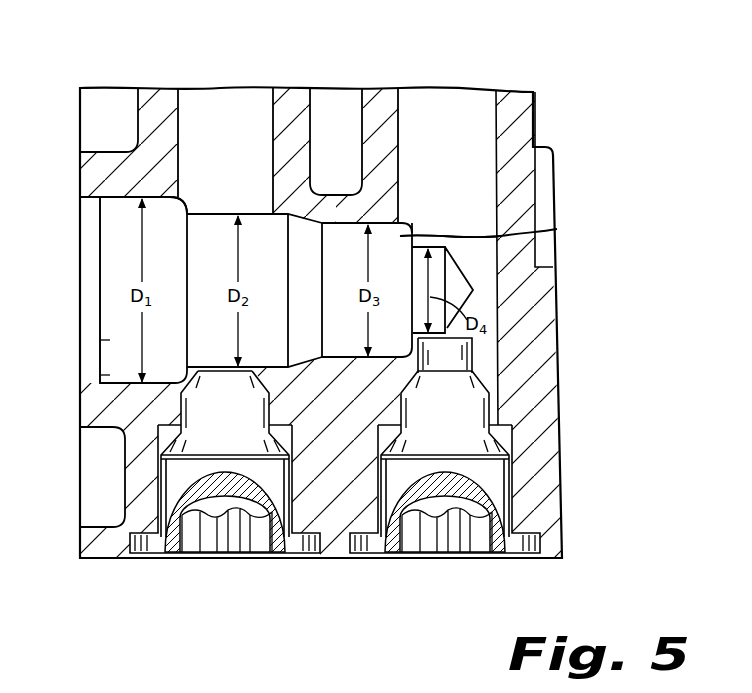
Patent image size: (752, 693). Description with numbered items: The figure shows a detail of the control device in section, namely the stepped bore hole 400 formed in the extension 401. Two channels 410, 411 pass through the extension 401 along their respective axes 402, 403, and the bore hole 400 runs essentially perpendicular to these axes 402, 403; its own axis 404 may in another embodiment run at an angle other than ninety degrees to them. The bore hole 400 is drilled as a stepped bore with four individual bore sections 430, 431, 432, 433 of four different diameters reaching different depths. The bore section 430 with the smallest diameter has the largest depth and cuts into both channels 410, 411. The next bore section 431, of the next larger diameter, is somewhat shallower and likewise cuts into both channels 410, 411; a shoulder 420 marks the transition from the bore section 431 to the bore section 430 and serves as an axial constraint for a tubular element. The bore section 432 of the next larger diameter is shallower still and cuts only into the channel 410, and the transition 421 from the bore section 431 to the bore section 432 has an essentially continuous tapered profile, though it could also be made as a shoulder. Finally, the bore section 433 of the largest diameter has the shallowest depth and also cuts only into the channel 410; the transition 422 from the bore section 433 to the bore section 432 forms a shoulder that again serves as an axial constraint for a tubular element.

The bore hole 400 is at (96, 256).
The extension 401 is at (545, 321).
The axis 402 is at (225, 545).
The axis 403 is at (445, 545).
The axis of the bore hole 404 is at (123, 287).
The channel 410 is at (218, 106).
The channel 411 is at (456, 118).
The shoulder 420 is at (410, 218).
The transition 421 is at (301, 212).
The step 422 is at (191, 194).
The bore section 430 is at (438, 272).
The bore section 431 is at (540, 230).
The bore section 432 is at (212, 335).
The bore section 433 is at (120, 342).